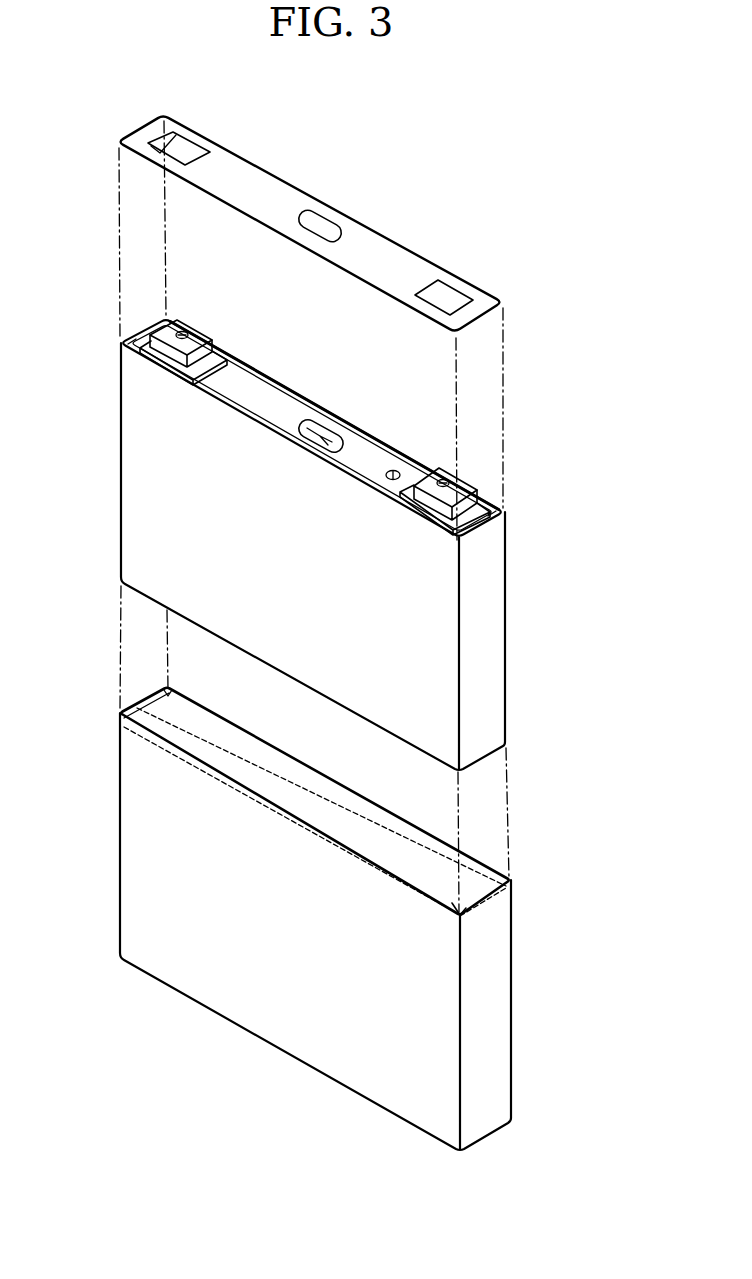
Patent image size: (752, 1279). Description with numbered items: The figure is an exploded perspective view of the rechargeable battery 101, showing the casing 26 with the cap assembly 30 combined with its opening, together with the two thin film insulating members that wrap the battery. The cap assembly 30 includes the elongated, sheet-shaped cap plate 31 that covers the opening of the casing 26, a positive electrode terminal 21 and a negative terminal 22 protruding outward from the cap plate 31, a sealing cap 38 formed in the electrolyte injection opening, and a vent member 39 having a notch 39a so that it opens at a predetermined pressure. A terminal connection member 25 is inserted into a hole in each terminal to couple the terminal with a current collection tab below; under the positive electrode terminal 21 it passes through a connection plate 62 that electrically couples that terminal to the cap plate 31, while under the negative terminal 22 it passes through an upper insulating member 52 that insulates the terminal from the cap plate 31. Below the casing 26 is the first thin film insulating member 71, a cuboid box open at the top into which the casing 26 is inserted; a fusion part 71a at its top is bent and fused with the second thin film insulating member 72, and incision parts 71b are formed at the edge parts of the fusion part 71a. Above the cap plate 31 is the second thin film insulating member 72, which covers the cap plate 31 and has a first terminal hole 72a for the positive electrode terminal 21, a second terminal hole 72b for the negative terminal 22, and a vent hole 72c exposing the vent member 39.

The rechargeable battery 101 is at (537, 590).
The second thin film insulating member 72 is at (272, 163).
The first terminal hole 72a is at (452, 290).
The second terminal hole 72b is at (192, 142).
The vent hole 72c is at (328, 216).
The casing 26 is at (160, 510).
The cap assembly 30 is at (375, 440).
The cap plate 31 is at (257, 385).
The positive electrode terminal 21 is at (465, 487).
The negative terminal 22 is at (201, 337).
The terminal connection member 25 is at (182, 334).
The upper insulating member 52 is at (160, 358).
The connection plate 62 is at (468, 512).
The sealing cap 38 is at (396, 472).
The vent member 39 is at (317, 427).
The notch 39a is at (326, 437).
The first thin film insulating member 71 is at (247, 1002).
The fusion part 71a is at (417, 890).
The incision parts 71b is at (462, 916).